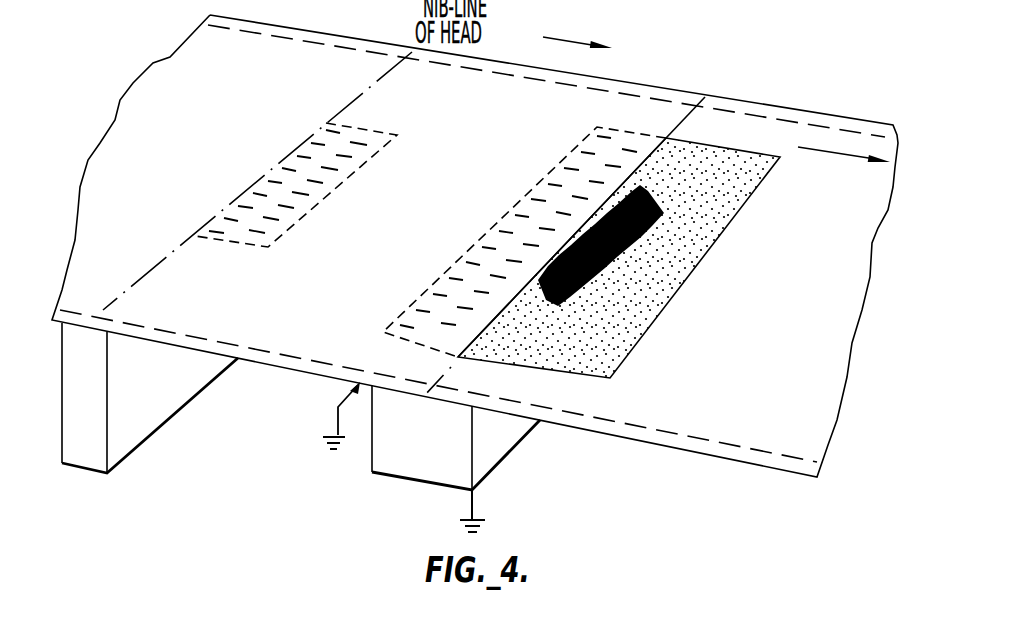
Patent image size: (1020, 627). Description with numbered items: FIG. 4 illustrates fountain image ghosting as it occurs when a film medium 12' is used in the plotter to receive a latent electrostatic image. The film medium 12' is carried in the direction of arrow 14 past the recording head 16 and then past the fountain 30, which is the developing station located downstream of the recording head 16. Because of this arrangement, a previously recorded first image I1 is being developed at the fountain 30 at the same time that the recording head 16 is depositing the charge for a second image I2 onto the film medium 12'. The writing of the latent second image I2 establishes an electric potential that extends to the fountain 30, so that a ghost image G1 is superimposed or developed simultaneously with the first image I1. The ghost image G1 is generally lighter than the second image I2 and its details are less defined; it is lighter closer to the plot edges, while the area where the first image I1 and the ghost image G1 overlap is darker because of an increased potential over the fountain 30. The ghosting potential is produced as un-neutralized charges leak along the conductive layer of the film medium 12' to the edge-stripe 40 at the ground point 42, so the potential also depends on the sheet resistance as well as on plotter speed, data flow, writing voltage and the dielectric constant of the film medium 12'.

The film medium 12' is at (475, 246).
The arrow 14 is at (575, 38).
The recording head 16 is at (151, 398).
The fountain 30 is at (433, 452).
The edge-stripe 40 is at (762, 452).
The ground point 42 is at (340, 406).
The first image I1 is at (619, 273).
The second image I2 is at (320, 200).
The ghost image G1 is at (570, 305).